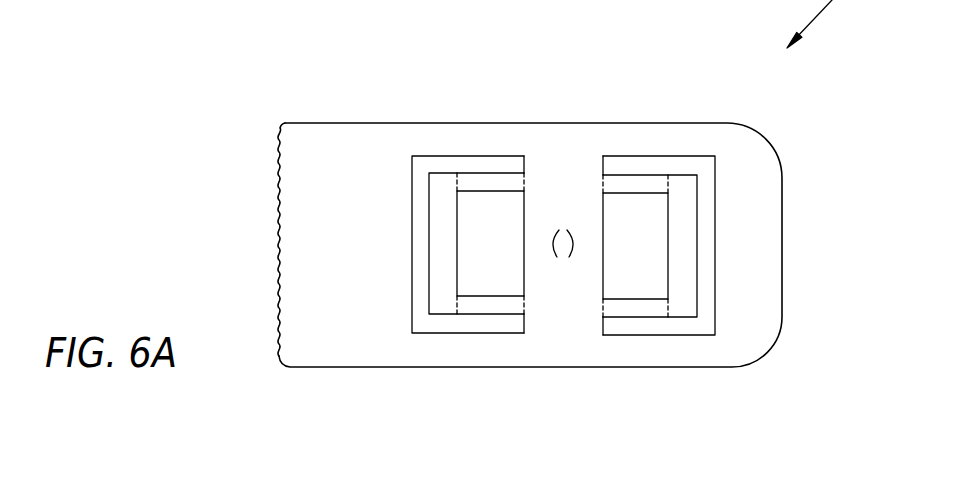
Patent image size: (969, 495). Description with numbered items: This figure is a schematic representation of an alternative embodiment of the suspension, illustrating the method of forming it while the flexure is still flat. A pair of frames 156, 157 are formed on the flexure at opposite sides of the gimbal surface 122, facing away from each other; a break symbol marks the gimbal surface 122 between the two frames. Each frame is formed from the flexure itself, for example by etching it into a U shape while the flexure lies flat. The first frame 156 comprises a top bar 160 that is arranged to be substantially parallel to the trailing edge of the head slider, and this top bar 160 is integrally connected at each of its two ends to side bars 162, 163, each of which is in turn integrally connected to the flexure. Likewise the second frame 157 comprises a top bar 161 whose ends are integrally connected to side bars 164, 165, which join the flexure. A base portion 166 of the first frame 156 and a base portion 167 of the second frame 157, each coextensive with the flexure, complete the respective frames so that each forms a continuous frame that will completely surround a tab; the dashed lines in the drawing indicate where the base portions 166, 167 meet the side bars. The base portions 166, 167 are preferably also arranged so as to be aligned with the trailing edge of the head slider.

The gimbal surface 122 is at (553, 230).
The frame 156 is at (440, 172).
The frame 157 is at (687, 175).
The top bar 160 is at (429, 267).
The top bar 161 is at (697, 263).
The side bar 162 is at (512, 172).
The side bar 163 is at (475, 315).
The side bar 164 is at (615, 175).
The side bar 165 is at (652, 317).
The base portion 166 is at (524, 283).
The base portion 167 is at (603, 285).